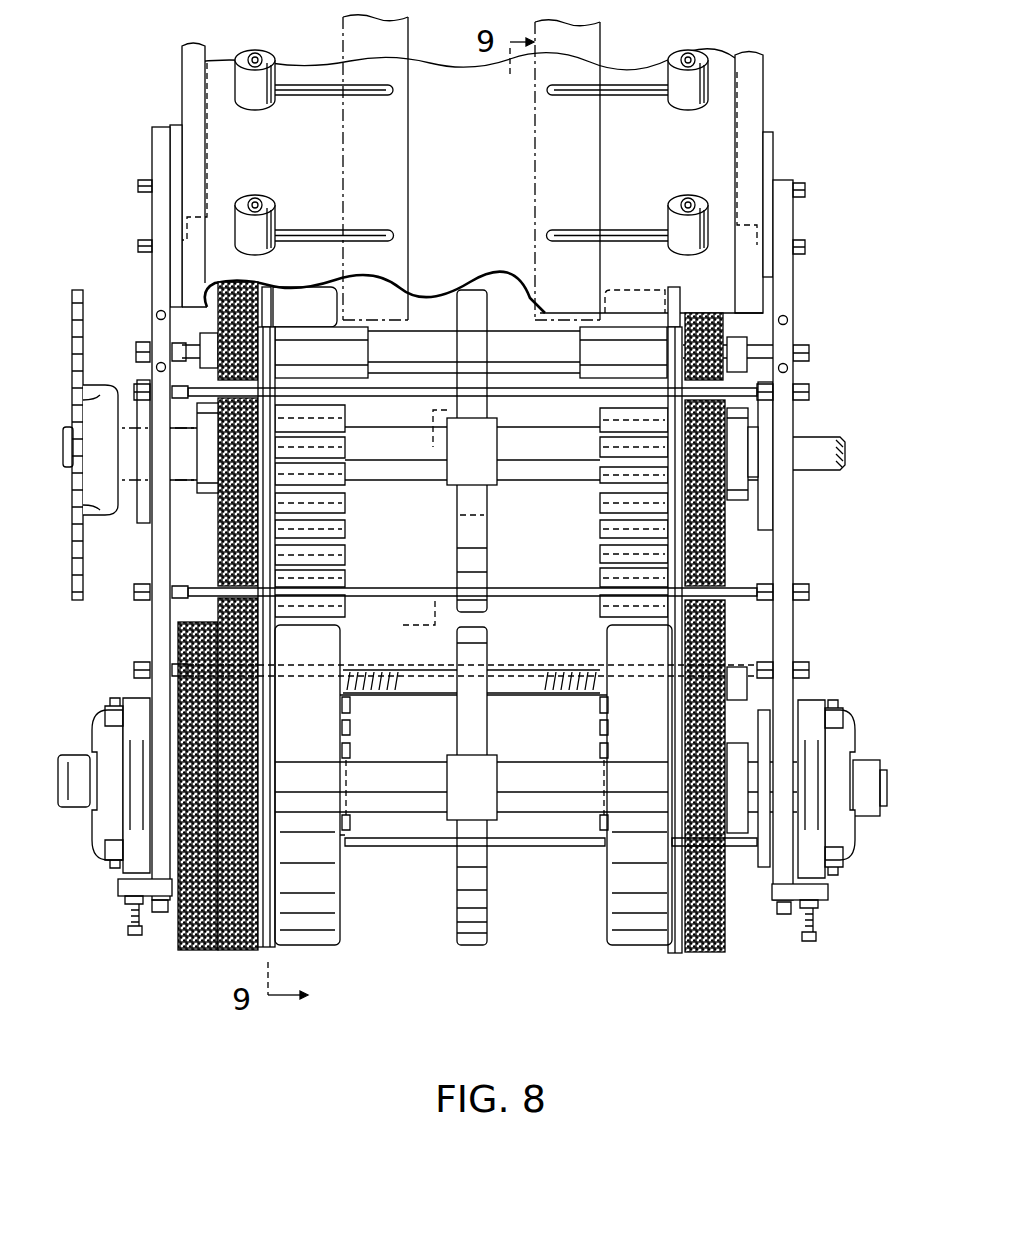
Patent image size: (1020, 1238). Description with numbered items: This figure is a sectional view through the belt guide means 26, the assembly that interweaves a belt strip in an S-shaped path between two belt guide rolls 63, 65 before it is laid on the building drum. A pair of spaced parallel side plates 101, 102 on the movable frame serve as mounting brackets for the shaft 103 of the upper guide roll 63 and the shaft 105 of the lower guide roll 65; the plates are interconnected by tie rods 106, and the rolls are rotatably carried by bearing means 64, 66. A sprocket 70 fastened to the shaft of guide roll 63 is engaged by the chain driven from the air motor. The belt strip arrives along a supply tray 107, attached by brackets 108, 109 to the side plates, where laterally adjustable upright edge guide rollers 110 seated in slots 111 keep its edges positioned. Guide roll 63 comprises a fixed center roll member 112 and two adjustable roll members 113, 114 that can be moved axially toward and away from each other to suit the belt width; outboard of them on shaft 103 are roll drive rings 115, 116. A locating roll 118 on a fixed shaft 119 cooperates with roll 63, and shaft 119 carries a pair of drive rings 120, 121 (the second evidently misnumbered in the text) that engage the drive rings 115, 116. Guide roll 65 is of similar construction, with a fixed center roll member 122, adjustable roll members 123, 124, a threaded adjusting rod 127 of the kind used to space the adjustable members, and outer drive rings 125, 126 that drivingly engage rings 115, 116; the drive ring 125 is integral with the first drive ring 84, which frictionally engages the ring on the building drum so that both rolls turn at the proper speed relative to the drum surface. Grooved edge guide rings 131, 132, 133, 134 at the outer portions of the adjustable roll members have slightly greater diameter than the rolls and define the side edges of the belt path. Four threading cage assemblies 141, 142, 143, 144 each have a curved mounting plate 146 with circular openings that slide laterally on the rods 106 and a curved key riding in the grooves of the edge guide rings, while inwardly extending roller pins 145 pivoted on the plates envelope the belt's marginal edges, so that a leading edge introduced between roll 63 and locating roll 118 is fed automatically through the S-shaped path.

The belt guide means 26 is at (600, 963).
The belt guide roll 63 is at (409, 311).
The bearing means 64 is at (140, 418).
The belt guide roll 65 is at (407, 956).
The bearing means 66 is at (83, 834).
The sprocket 70 is at (72, 303).
The first drive ring 84 is at (186, 951).
The side plate 101 is at (152, 616).
The side plate 102 is at (795, 525).
The shaft 103 is at (838, 462).
The shaft 105 is at (882, 777).
The tie rods 106 is at (526, 396).
The supply tray 107 is at (750, 80).
The bracket 108 is at (175, 138).
The bracket 109 is at (773, 143).
The edge guide rollers 110 is at (245, 97).
The slots 111 is at (375, 96).
The fixed center roll member 112 is at (487, 521).
The adjustable roll member 113 is at (317, 290).
The adjustable roll member 114 is at (603, 312).
The roll drive ring 115 is at (236, 548).
The roll drive ring 116 is at (715, 535).
The locating roll 118 is at (342, 327).
The fixed shaft 119 is at (775, 351).
The drive ring 120 is at (238, 300).
The block 121 is at (718, 333).
The fixed center roll member 122 is at (492, 945).
The adjustable roll member 123 is at (341, 902).
The adjustable roll member 124 is at (604, 886).
The drive ring 125 is at (233, 952).
The drive ring 126 is at (706, 952).
The threaded rod 127 is at (521, 675).
The grooved edge guide ring 131 is at (267, 287).
The grooved edge guide ring 132 is at (674, 323).
The grooved edge guide ring 133 is at (272, 920).
The grooved edge guide ring 134 is at (676, 920).
The threading cage assembly 141 is at (263, 468).
The threading cage assembly 142 is at (688, 452).
The threading cage assembly 143 is at (276, 556).
The threading cage assembly 144 is at (685, 521).
The roller pins 145 is at (336, 471).
The curved mounting plate 146 is at (276, 510).